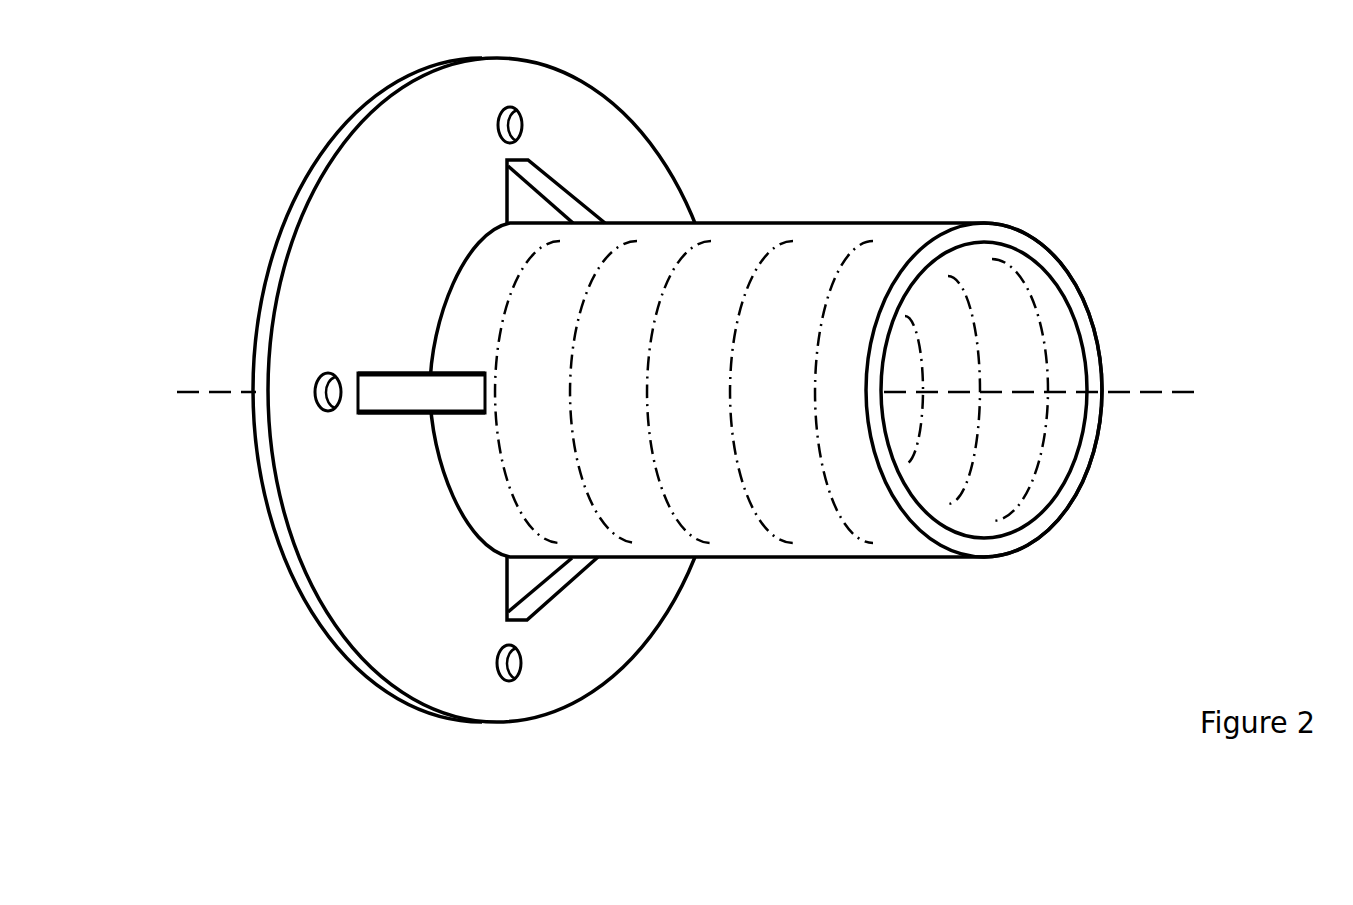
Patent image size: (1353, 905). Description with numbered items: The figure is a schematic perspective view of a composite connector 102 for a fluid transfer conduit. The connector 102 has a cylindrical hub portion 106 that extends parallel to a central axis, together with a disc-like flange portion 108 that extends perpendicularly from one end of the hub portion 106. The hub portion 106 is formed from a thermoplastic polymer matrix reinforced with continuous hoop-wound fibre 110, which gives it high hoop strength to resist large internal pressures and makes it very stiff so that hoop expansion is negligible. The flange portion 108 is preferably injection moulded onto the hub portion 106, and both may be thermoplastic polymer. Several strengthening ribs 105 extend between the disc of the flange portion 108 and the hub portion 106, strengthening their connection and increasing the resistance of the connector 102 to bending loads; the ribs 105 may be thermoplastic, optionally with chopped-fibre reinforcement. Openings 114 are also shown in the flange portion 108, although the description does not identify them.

The composite connector 102 is at (687, 451).
The strengthening ribs 105 is at (557, 193).
The hub portion 106 is at (978, 512).
The flange portion 108 is at (647, 622).
The hoop-wound fibre 110 is at (832, 470).
The mounting hole 114 is at (500, 122).